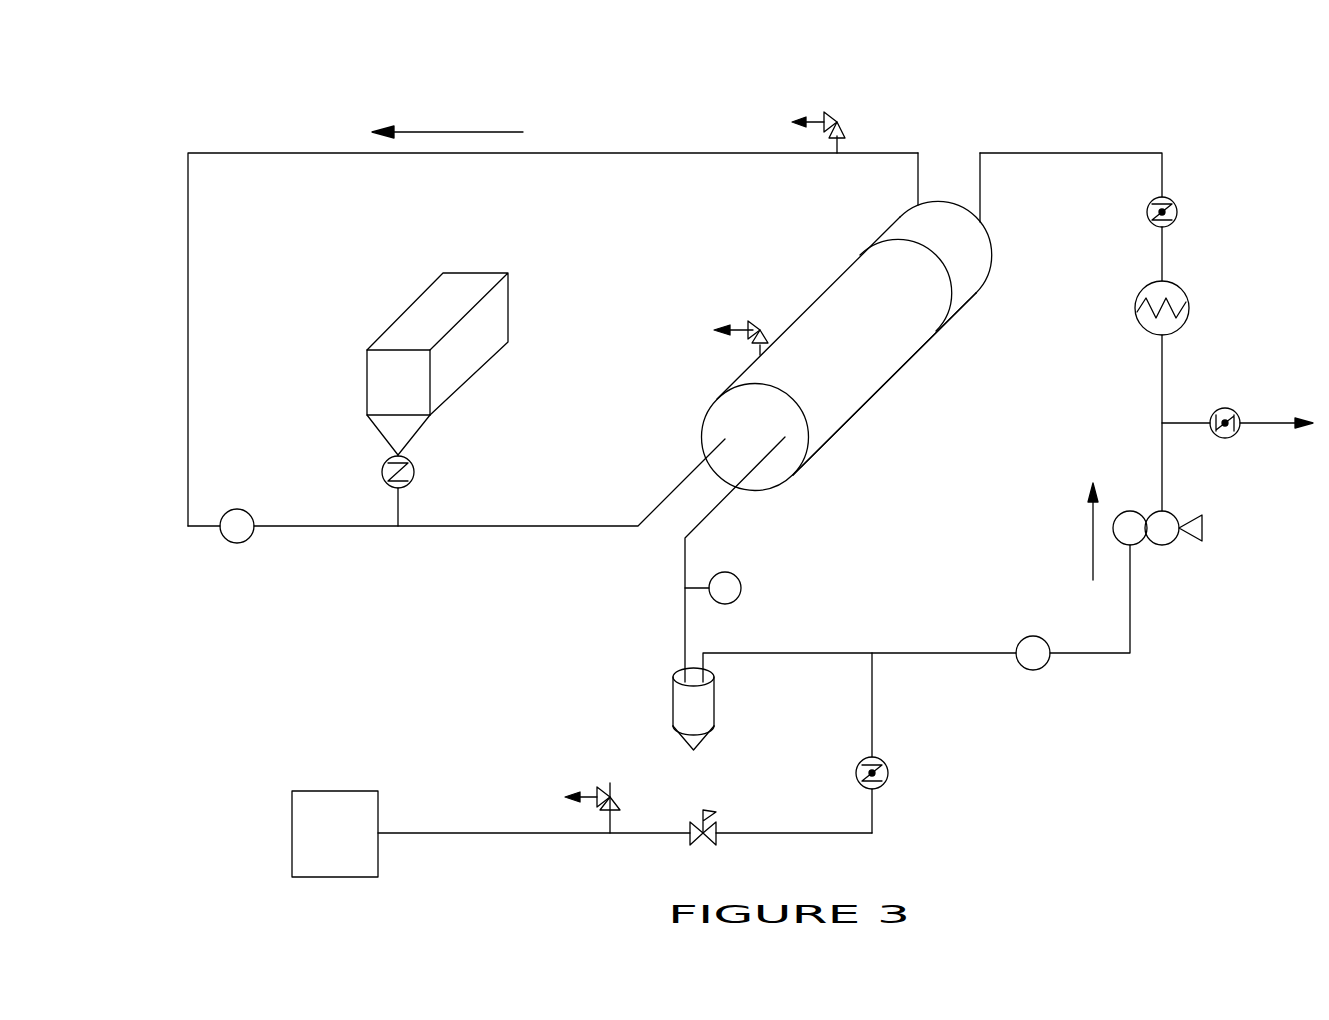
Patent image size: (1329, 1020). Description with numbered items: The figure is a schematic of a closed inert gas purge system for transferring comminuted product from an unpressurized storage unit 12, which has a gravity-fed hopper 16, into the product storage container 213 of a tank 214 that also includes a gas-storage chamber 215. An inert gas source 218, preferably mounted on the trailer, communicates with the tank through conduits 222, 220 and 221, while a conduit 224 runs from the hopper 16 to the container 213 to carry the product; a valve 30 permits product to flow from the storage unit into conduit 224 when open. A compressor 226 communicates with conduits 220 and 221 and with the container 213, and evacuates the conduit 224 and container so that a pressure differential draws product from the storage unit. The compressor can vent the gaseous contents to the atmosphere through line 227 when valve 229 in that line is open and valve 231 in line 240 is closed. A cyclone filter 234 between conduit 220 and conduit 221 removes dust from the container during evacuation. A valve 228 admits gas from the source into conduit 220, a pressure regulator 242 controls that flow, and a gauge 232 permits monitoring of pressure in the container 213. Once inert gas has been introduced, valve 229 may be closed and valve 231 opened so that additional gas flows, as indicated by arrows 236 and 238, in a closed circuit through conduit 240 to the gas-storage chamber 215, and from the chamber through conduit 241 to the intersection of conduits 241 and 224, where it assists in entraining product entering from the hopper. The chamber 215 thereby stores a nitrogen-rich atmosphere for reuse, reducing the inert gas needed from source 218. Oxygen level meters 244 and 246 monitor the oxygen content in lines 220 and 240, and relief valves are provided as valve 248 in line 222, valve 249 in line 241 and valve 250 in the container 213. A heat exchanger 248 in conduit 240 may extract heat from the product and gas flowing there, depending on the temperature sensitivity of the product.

The storage unit 12 is at (477, 340).
The hopper 16 is at (383, 432).
The valve 30 is at (414, 465).
The product storage container 213 is at (885, 365).
The tank 214 is at (812, 288).
The gas-storage chamber 215 is at (967, 268).
The inert gas source 218 is at (292, 843).
The conduit 220 is at (827, 653).
The conduit 221 is at (685, 618).
The conduit 222 is at (433, 833).
The conduit 224 is at (497, 526).
The compressor 226 is at (1172, 508).
The line 227 is at (1188, 423).
The valve 228 is at (886, 766).
The valve 229 is at (1232, 410).
The valve 231 is at (1175, 205).
The gauge 232 is at (741, 588).
The cyclone filter 234 is at (714, 706).
The arrow 236 is at (1090, 547).
The arrow 238 is at (452, 132).
The conduit 240 is at (1040, 153).
The conduit 241 is at (595, 153).
The pressure regulator 242 is at (706, 843).
The oxygen level meter 244 is at (1040, 668).
The oxygen level meter 246 is at (245, 511).
The relief valve / heat exchanger 248 is at (1188, 297).
The relief valve 249 is at (827, 117).
The relief valve 250 is at (745, 320).